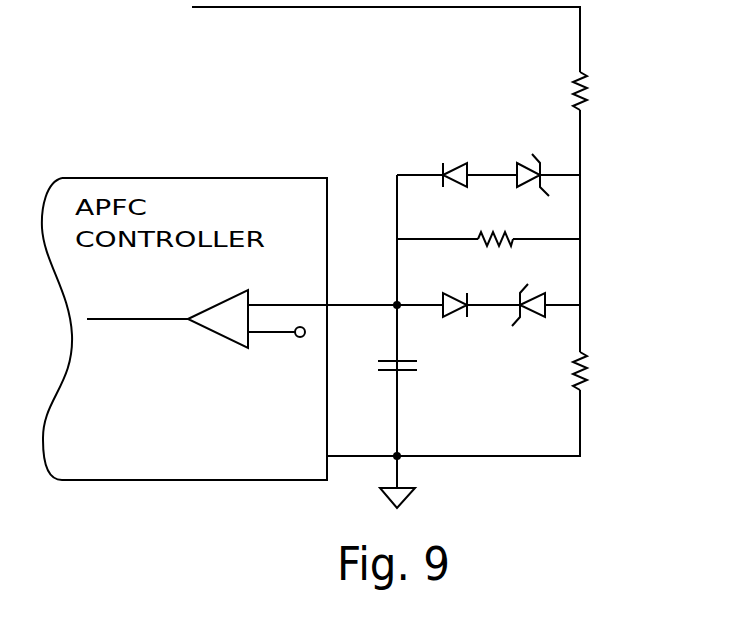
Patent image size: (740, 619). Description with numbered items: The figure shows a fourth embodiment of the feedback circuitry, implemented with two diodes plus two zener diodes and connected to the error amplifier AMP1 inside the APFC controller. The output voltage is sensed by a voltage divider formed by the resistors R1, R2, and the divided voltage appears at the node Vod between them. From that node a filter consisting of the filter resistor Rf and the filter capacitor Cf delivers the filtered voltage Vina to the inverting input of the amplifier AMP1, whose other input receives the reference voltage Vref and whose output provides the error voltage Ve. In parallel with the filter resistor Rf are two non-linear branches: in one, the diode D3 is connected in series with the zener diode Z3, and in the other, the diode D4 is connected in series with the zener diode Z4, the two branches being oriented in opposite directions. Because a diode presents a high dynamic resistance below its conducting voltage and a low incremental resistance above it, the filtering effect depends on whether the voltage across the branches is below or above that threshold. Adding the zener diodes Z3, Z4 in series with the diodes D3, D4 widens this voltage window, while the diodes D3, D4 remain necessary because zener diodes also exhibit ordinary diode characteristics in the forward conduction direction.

The voltage divider resistor R1 is at (558, 92).
The voltage divider resistor R2 is at (559, 371).
The filter resistor Rf is at (495, 222).
The diode D3 is at (455, 155).
The zener diode Z3 is at (533, 160).
The diode D4 is at (455, 286).
The zener diode Z4 is at (529, 291).
The filter capacitor Cf is at (383, 385).
The output voltage node Vod is at (604, 245).
The amplifier input voltage node Vina is at (367, 362).
The error voltage Ve is at (137, 301).
The reference voltage Vref is at (276, 353).
The error amplifier AMP1 is at (213, 335).